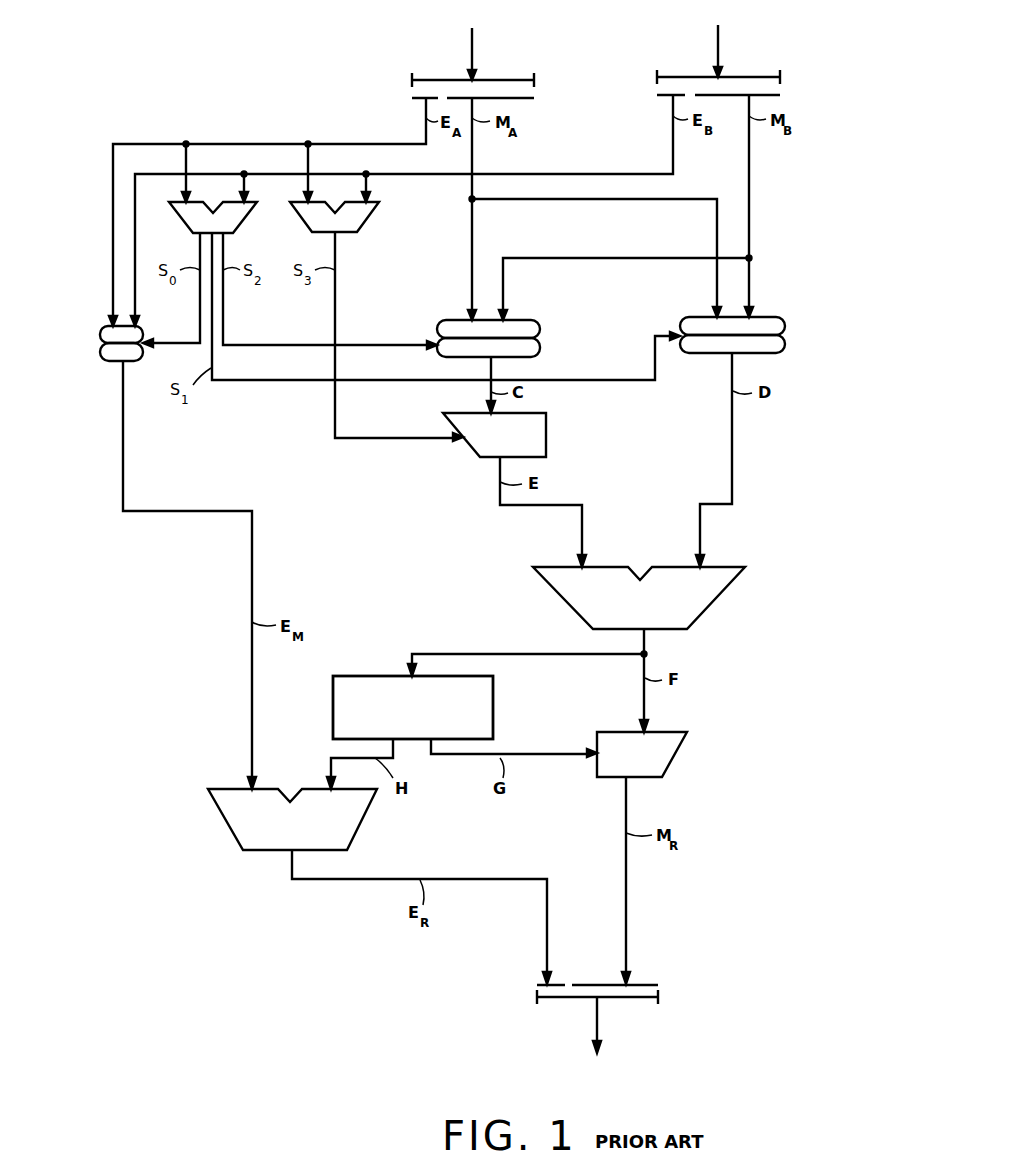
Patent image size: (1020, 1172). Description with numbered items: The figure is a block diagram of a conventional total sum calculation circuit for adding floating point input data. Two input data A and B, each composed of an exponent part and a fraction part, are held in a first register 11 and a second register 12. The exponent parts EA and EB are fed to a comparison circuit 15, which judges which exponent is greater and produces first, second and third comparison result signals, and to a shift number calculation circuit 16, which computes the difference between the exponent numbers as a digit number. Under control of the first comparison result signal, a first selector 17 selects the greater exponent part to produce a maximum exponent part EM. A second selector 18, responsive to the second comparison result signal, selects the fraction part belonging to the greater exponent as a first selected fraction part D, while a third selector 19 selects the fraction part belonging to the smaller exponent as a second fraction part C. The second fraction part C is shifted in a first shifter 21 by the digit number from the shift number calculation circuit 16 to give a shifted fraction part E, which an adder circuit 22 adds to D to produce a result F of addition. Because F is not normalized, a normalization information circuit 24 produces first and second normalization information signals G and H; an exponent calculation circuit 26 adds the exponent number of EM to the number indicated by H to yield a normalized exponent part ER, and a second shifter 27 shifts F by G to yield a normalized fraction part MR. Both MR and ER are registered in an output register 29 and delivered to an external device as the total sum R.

The first register 11 is at (495, 74).
The second register 12 is at (735, 72).
The comparison circuit 15 is at (243, 222).
The shift number calculation circuit 16 is at (380, 222).
The first selector 17 is at (100, 356).
The second selector 18 is at (762, 313).
The third selector 19 is at (515, 318).
The first shifter 21 is at (466, 447).
The adder circuit 22 is at (718, 598).
The normalization information circuit 24 is at (493, 700).
The exponent calculation circuit 26 is at (225, 822).
The second shifter 27 is at (680, 750).
The output register 29 is at (660, 995).